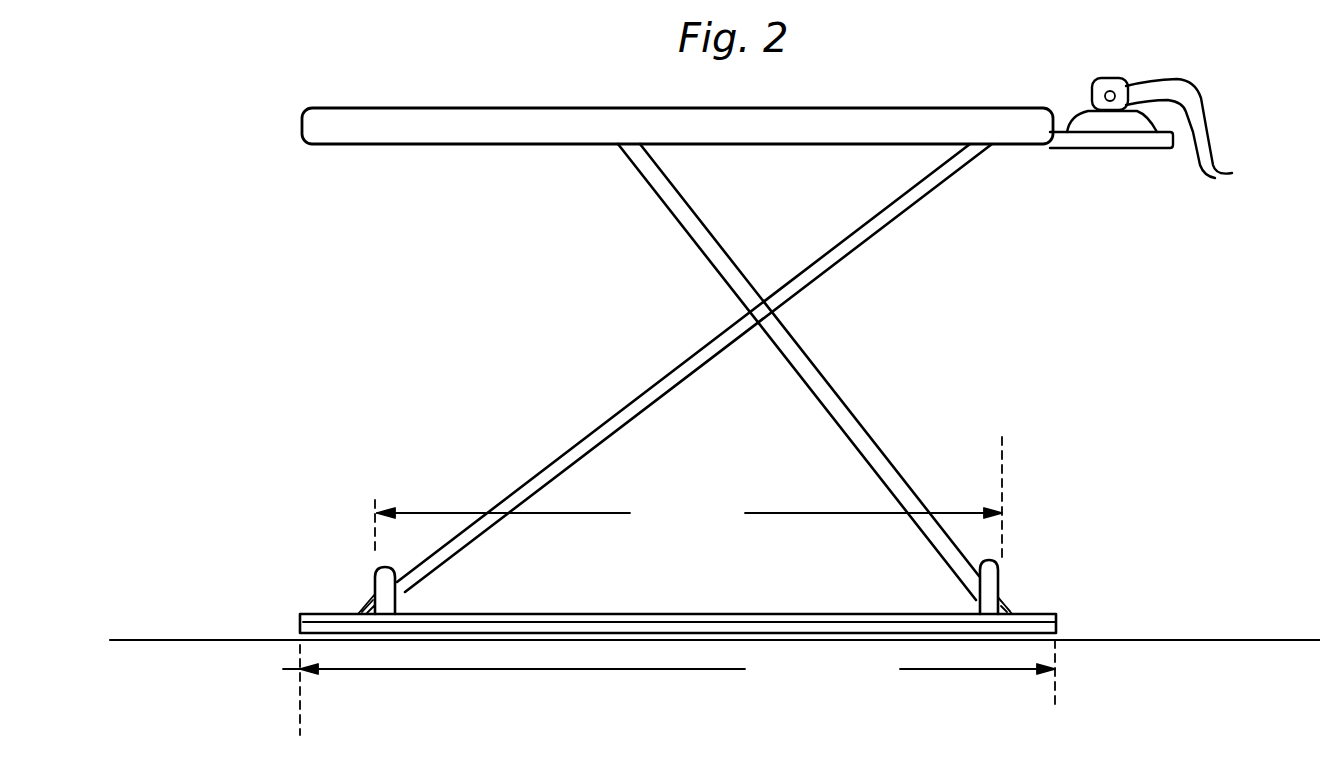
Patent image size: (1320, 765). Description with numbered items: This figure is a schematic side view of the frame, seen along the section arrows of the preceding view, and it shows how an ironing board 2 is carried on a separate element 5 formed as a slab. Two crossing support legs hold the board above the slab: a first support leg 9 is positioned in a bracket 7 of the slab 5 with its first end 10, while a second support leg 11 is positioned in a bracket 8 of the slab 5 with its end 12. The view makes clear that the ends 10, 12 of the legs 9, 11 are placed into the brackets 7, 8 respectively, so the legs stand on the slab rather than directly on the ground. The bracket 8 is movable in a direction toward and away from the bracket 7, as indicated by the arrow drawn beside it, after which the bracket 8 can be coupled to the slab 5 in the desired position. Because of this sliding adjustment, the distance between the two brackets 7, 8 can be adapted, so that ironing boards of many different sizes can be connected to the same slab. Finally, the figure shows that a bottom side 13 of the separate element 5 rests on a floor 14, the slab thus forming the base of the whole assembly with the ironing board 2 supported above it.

The ironing board 2 is at (447, 122).
The separate element 5 is at (660, 623).
The bracket 7 is at (998, 572).
The bracket 8 is at (398, 565).
The first support leg 9 is at (840, 408).
The first end 10 is at (961, 596).
The second support leg 11 is at (596, 430).
The end 12 is at (417, 599).
The bottom side 13 is at (872, 641).
The floor 14 is at (1133, 640).